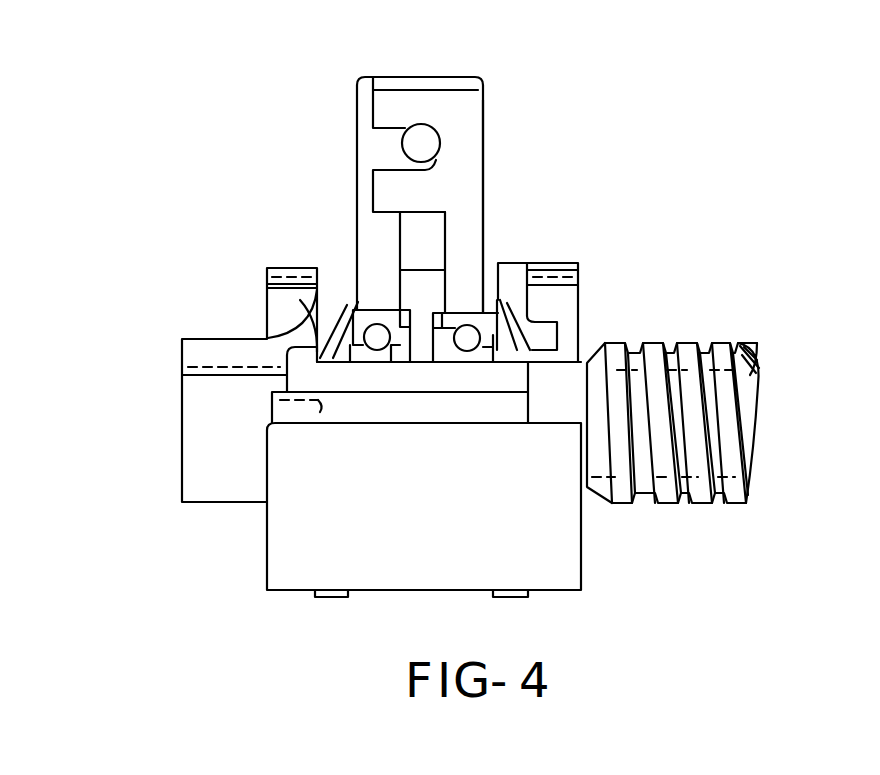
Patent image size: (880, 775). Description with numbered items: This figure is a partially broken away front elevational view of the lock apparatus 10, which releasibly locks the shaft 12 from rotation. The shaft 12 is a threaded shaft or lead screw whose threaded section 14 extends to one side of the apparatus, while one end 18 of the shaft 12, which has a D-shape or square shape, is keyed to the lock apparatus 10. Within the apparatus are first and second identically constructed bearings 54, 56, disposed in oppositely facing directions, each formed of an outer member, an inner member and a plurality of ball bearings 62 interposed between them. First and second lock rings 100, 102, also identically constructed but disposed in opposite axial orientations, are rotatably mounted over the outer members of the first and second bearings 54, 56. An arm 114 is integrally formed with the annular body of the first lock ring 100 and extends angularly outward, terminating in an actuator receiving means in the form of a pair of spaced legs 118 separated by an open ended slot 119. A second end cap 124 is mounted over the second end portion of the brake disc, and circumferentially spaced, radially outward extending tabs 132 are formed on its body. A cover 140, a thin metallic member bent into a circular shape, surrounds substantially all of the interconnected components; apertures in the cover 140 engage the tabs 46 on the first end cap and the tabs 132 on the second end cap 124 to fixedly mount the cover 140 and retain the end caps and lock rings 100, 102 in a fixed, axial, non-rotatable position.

The lock apparatus 10 is at (610, 32).
The first lock ring 100 is at (470, 119).
The arm 114 is at (478, 170).
The spaced legs 118 is at (370, 228).
The open ended slot 119 is at (424, 138).
The second lock ring 102 is at (370, 229).
The ball bearings 62 is at (353, 326).
The first bearing 54 is at (494, 284).
The second bearing 56 is at (343, 328).
The second end cap 124 is at (216, 332).
The end of the shaft 18 is at (461, 418).
The cover 140 is at (294, 553).
The tabs 132 is at (343, 597).
The tabs 46 is at (520, 597).
The shaft 12 is at (722, 328).
The threaded section 14 is at (681, 343).